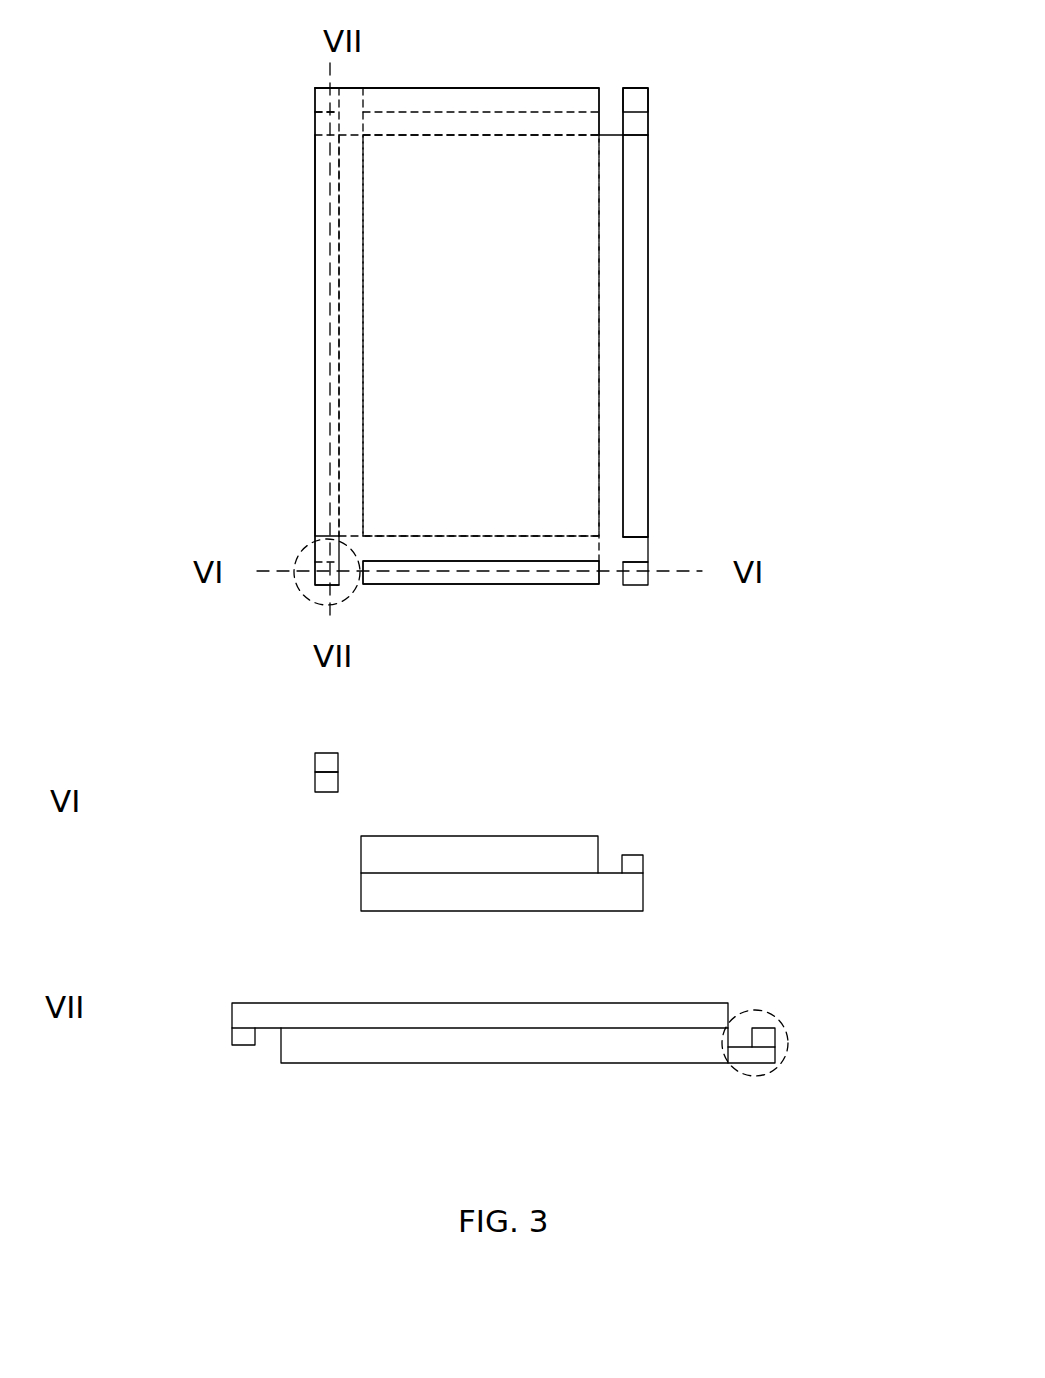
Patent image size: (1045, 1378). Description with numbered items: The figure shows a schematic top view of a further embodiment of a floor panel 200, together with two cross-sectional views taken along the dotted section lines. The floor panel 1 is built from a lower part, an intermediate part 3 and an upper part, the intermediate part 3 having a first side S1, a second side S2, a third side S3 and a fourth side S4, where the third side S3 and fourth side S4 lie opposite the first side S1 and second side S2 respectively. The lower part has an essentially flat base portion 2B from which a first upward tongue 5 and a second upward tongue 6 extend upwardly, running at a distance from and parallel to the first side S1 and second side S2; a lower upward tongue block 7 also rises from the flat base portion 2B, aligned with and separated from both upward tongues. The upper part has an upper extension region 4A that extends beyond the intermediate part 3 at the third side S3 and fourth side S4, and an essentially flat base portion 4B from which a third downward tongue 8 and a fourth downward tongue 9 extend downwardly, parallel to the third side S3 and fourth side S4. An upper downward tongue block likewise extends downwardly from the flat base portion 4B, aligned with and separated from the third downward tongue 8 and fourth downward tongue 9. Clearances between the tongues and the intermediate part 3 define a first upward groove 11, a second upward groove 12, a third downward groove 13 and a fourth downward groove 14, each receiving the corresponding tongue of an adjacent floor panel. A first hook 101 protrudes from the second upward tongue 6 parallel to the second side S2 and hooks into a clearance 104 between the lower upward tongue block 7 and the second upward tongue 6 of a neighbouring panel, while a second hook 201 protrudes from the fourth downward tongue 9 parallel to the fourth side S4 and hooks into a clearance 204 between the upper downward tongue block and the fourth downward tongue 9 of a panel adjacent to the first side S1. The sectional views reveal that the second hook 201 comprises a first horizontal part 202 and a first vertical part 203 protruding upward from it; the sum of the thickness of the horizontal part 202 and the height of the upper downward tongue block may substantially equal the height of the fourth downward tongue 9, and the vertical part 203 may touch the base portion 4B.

The floor panel 1 is at (752, 262).
The floor panel 200 is at (118, 124).
The intermediate part 3 is at (542, 456).
The upper extension region 4A is at (372, 123).
The flat base portion 4B is at (473, 1018).
The first upward tongue 5 is at (582, 580).
The second upward tongue 6 is at (635, 215).
The lower upward tongue block 7 is at (648, 568).
The third downward tongue 8 is at (587, 92).
The fourth downward tongue 9 is at (327, 245).
The first upward groove 11 is at (485, 545).
The second upward groove 12 is at (608, 432).
The third downward groove 13 is at (530, 118).
The fourth downward groove 14 is at (345, 385).
The first hook 101 is at (665, 122).
The clearance 104 is at (640, 547).
The second hook 201 is at (300, 550).
The first horizontal part 202 is at (327, 782).
The first vertical part 203 is at (327, 765).
The clearance 204 is at (325, 120).
The flat base portion 2B is at (633, 893).
The first side S1 is at (403, 535).
The second side S2 is at (598, 310).
The third side S3 is at (477, 138).
The fourth side S4 is at (365, 243).